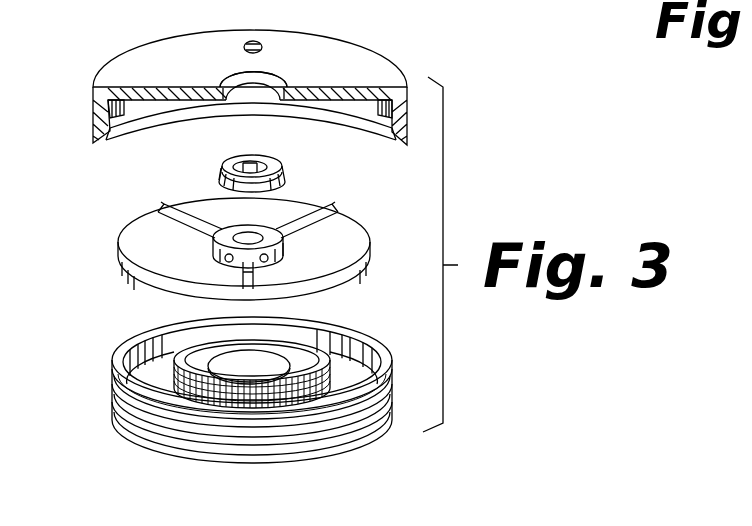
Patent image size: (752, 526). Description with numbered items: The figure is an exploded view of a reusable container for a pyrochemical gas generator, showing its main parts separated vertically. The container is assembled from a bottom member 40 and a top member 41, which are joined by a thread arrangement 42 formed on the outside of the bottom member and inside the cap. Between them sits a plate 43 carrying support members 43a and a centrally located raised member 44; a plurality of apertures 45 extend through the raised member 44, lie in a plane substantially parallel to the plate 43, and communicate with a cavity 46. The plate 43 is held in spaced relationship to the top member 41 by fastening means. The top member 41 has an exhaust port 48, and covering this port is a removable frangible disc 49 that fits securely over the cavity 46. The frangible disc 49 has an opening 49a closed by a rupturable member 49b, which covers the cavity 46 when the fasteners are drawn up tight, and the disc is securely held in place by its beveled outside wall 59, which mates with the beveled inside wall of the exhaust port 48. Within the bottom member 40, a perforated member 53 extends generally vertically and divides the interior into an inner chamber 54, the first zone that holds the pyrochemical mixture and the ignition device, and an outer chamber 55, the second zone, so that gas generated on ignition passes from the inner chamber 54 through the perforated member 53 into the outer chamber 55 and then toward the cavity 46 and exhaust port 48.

The bottom member 40 is at (133, 437).
The top member 41 is at (176, 50).
The thread arrangement 42 is at (122, 138).
The plate 43 is at (126, 266).
The support members 43a is at (157, 212).
The raised member 44 is at (213, 245).
The apertures 45 is at (285, 254).
The cavity 46 is at (244, 236).
The exhaust port 48 is at (260, 80).
The frangible disc 49 is at (300, 167).
The opening 49a is at (258, 162).
The rupturable member 49b is at (280, 172).
The perforated member 53 is at (334, 362).
The inner chamber 54 is at (196, 352).
The outer chamber 55 is at (145, 352).
The beveled outside wall 59 is at (222, 173).